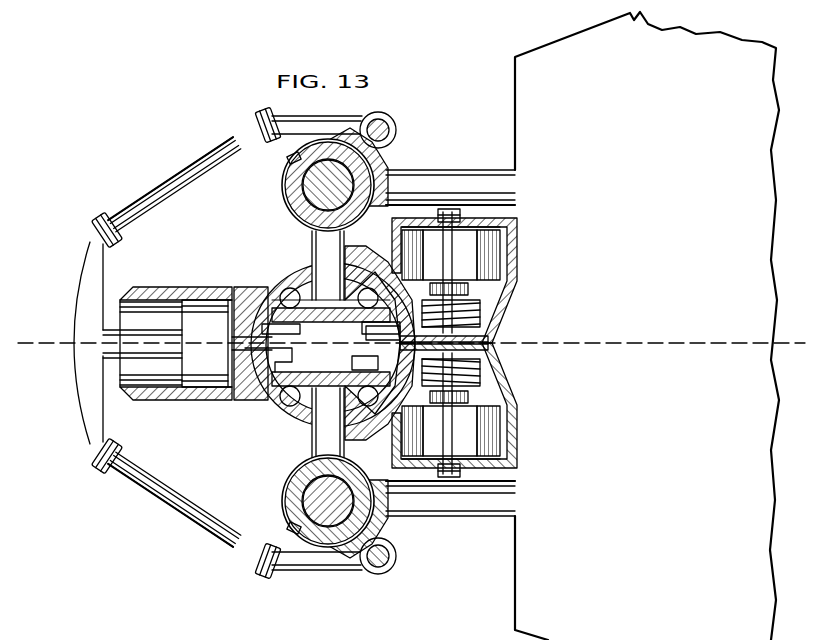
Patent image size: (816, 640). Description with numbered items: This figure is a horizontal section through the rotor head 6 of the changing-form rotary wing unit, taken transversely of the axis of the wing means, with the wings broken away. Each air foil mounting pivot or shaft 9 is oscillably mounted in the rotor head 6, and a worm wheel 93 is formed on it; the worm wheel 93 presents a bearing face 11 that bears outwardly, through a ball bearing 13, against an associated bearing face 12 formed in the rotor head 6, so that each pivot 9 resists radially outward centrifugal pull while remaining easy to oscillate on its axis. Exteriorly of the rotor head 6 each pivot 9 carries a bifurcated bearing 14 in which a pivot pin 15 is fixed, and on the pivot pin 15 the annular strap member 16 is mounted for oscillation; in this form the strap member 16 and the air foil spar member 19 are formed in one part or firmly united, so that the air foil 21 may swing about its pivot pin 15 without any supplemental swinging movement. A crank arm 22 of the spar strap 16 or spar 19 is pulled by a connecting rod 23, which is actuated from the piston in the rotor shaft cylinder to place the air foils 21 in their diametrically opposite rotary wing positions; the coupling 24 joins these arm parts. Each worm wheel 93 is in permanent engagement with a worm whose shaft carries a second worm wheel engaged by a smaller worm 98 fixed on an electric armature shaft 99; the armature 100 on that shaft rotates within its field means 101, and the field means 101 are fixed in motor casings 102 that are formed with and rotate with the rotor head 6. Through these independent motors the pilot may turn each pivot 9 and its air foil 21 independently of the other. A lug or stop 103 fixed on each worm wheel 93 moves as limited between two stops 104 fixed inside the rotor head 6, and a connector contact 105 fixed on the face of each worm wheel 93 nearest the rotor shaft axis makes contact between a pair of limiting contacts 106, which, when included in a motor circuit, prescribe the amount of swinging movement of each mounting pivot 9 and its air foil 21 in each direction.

The rotor head 6 is at (370, 262).
The air foil mounting pivot or shaft 9 is at (314, 258).
The bearing face 11 is at (292, 405).
The bearing face 12 is at (270, 290).
The ball bearing 13 is at (262, 292).
The bifurcated bearing 14 is at (283, 187).
The pivot pin 15 is at (303, 171).
The annular strap member 16 is at (302, 196).
The air foil spar member 19 is at (414, 181).
The air foil 21 is at (515, 108).
The crank arm 22 is at (392, 117).
The connecting rod 23 is at (178, 188).
The coupling 24 is at (256, 130).
The worm wheel 93 is at (252, 300).
The worm 98 is at (482, 312).
The electric armature shaft 99 is at (462, 214).
The armature 100 is at (448, 243).
The field means 101 is at (490, 253).
The motor casing 102 is at (518, 284).
The lug or stop 103 is at (331, 315).
The lug or stop 104 is at (317, 377).
The connector contact 105 is at (252, 343).
The limiting contact 106 is at (240, 392).